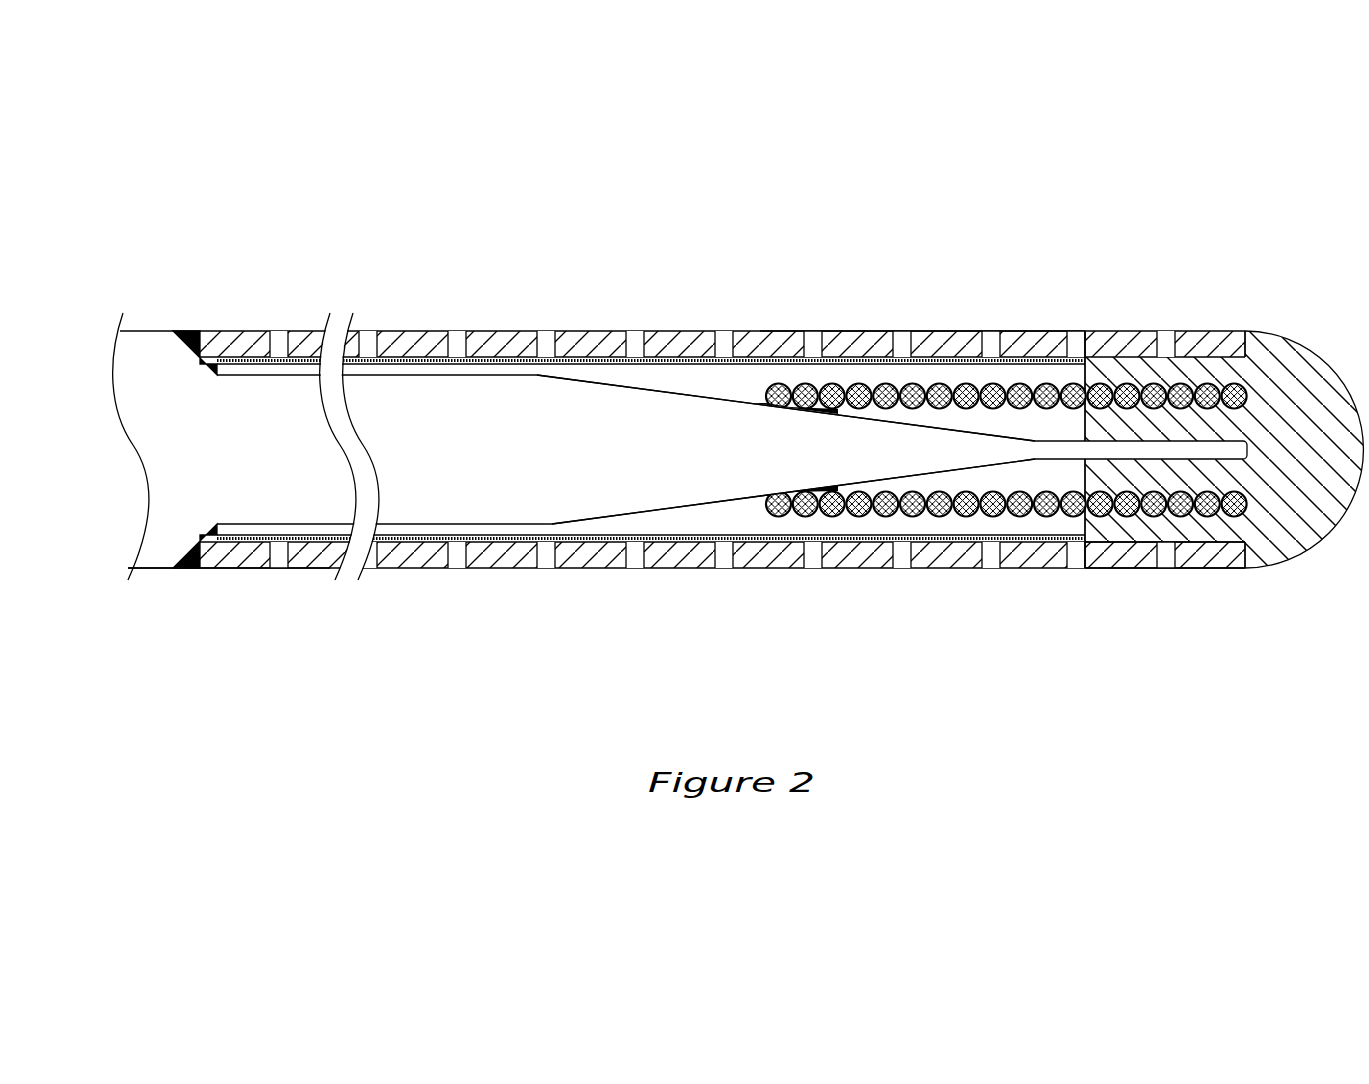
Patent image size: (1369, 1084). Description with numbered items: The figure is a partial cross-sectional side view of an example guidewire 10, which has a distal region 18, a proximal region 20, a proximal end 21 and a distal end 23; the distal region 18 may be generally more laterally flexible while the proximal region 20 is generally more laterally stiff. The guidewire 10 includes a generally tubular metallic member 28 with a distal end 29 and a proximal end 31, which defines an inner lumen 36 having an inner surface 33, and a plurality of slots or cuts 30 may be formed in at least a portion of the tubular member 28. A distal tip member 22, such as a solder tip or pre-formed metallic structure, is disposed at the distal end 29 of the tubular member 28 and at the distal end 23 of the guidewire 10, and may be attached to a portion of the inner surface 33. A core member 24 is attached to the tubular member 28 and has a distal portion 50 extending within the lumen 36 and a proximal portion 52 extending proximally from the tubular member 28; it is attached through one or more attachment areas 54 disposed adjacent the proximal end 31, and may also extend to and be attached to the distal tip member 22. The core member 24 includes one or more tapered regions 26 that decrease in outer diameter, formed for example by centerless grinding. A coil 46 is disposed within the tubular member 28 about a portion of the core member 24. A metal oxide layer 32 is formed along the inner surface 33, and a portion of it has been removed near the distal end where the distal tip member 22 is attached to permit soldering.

The guidewire 10 is at (686, 320).
The distal region 18 is at (942, 330).
The proximal region 20 is at (150, 327).
The proximal end 21 is at (127, 583).
The distal tip member 22 is at (1270, 378).
The distal end 23 is at (1241, 318).
The core member 24 is at (530, 372).
The tapered region 26 is at (727, 400).
The tubular member 28 is at (1106, 330).
The distal end of tubular member 29 is at (1230, 583).
The slots or cuts 30 is at (1076, 342).
The proximal end of tubular member 31 is at (268, 588).
The metal oxide layer 32 is at (597, 360).
The inner surface 33 is at (838, 368).
The inner lumen 36 is at (714, 514).
The coil 46 is at (1012, 386).
The distal portion 50 is at (551, 517).
The proximal portion 52 is at (162, 573).
The attachment area 54 is at (192, 327).